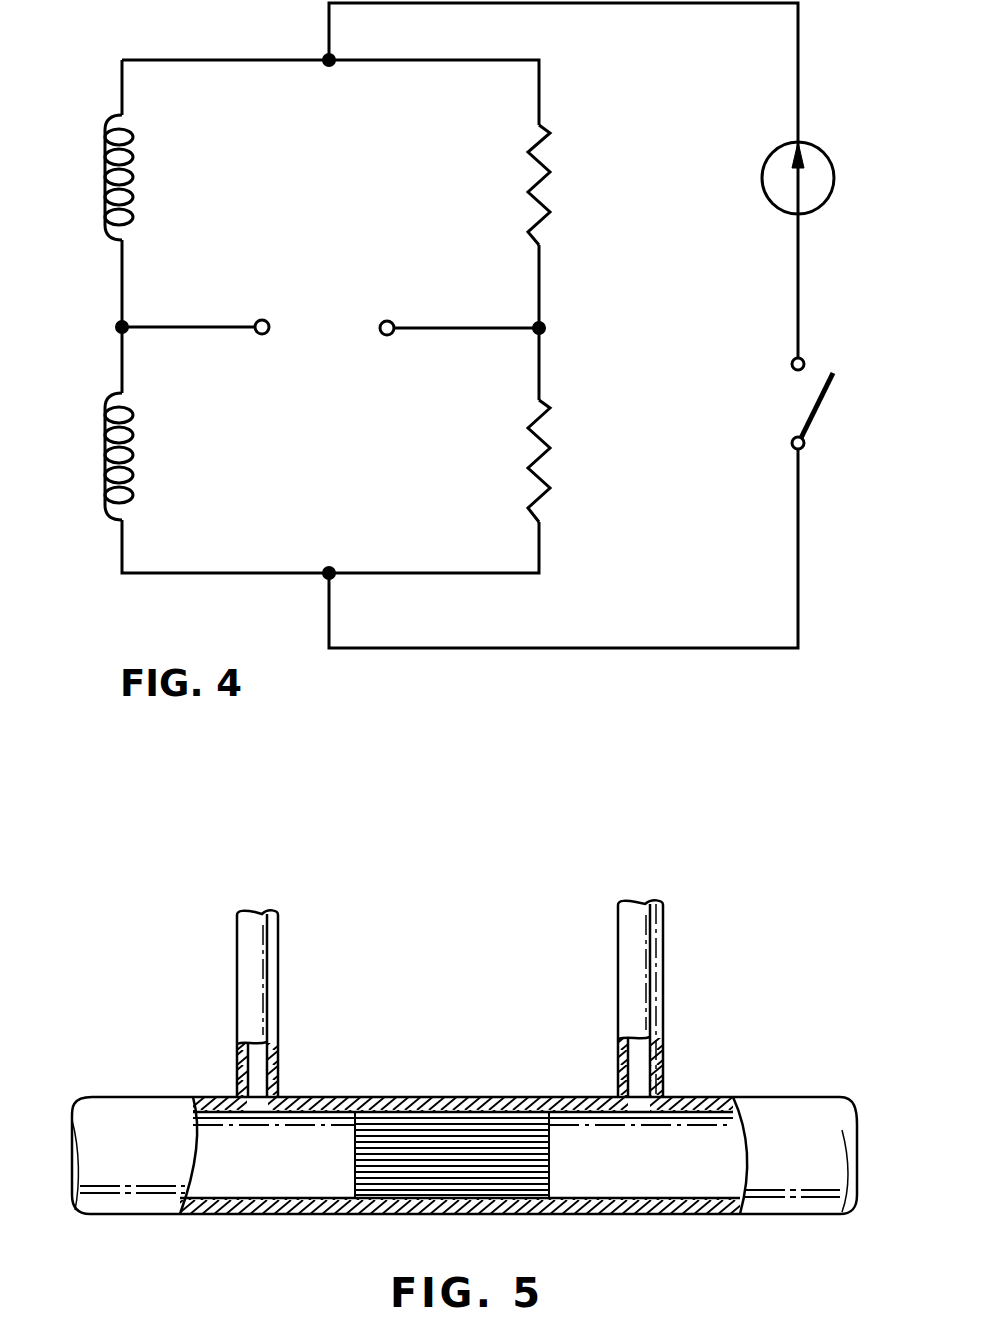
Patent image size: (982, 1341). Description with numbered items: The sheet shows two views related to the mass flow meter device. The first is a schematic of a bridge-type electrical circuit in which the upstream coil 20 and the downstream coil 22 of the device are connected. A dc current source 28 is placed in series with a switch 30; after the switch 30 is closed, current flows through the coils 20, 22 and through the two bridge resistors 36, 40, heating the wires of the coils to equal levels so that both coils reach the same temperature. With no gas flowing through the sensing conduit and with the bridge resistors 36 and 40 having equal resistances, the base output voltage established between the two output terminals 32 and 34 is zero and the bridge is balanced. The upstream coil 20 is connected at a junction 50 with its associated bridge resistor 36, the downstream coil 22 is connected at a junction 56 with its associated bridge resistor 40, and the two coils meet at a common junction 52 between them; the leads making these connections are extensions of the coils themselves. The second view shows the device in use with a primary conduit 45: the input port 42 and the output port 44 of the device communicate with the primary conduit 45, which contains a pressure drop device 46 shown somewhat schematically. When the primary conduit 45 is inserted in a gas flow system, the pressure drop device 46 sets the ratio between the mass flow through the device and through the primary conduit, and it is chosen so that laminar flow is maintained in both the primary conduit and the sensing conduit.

In FIG. 4, the upstream coil 20 is at (130, 197).
In FIG. 4, the downstream coil 22 is at (130, 457).
In FIG. 4, the dc current source 28 is at (762, 172).
In FIG. 4, the switch 30 is at (810, 408).
In FIG. 4, the output terminal 32 is at (266, 320).
In FIG. 4, the output terminal 34 is at (390, 337).
In FIG. 4, the bridge resistor 36 is at (528, 175).
In FIG. 4, the bridge resistor 40 is at (526, 446).
In FIG. 5, the input port 42 is at (258, 1100).
In FIG. 5, the output port 44 is at (642, 1105).
In FIG. 5, the primary conduit 45 is at (110, 1100).
In FIG. 5, the pressure drop device 46 is at (426, 1130).
In FIG. 4, the junction 50 is at (329, 62).
In FIG. 4, the junction 52 is at (122, 327).
In FIG. 4, the junction 56 is at (329, 573).